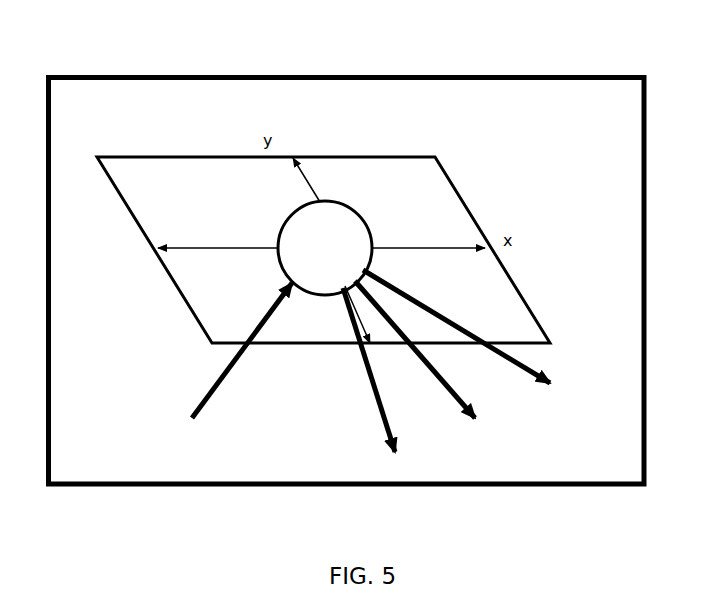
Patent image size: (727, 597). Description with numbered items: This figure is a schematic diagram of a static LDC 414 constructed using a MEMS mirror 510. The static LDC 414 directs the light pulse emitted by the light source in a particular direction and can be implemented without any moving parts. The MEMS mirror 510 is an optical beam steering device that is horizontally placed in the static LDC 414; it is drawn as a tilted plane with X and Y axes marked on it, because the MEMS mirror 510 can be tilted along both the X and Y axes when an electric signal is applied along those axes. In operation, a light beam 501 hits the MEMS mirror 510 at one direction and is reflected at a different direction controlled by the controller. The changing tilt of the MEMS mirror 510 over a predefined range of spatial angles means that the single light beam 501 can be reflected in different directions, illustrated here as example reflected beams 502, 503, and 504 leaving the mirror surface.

The static LDC 414 is at (550, 73).
The MEMS mirror 510 is at (435, 151).
The light beam 501 is at (223, 350).
The reflected beam 502 is at (365, 370).
The reflected beam 503 is at (428, 365).
The reflected beam 504 is at (481, 326).